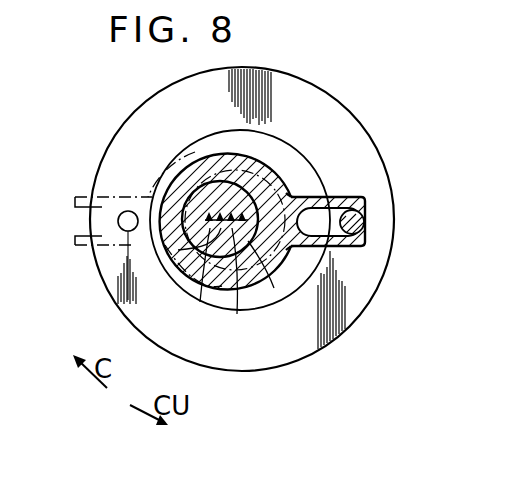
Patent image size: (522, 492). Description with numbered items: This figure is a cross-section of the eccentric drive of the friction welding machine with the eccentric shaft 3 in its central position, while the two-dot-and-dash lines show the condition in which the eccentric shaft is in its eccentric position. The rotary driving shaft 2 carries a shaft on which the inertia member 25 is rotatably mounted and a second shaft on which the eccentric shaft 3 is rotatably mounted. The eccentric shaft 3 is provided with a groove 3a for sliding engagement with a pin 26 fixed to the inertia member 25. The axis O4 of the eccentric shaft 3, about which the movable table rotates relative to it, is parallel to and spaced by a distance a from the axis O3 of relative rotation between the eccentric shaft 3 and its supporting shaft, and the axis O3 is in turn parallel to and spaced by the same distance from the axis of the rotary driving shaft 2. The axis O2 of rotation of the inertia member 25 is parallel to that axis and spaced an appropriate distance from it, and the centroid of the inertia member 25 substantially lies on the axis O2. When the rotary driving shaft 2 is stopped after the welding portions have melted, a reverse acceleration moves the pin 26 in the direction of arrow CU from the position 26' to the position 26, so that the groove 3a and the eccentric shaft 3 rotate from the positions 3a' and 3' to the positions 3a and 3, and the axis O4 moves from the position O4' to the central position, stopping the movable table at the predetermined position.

The inertia member 25 is at (352, 122).
The eccentric shaft 3 is at (265, 220).
The groove 3a is at (326, 205).
The pin 26 is at (387, 222).
The rotary driving shaft 2 is at (268, 248).
The axis of rotation of the inertia member O2 is at (274, 288).
The axis of relative rotation between shafts 2a and 3 O3 is at (200, 302).
The axis of the eccentric shaft O4 is at (246, 289).
The eccentric position of axis O4 O4' is at (184, 277).
The eccentric position of the eccentric shaft 3' is at (181, 204).
The eccentric position of the groove 3a' is at (99, 201).
The eccentric position of the pin 26' is at (84, 255).